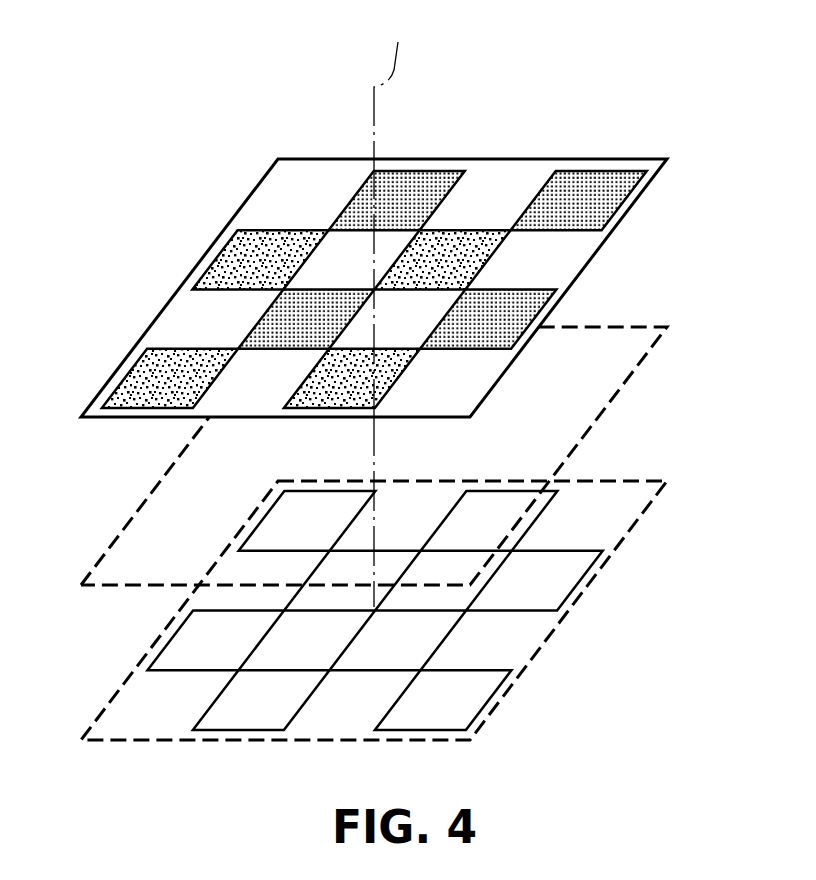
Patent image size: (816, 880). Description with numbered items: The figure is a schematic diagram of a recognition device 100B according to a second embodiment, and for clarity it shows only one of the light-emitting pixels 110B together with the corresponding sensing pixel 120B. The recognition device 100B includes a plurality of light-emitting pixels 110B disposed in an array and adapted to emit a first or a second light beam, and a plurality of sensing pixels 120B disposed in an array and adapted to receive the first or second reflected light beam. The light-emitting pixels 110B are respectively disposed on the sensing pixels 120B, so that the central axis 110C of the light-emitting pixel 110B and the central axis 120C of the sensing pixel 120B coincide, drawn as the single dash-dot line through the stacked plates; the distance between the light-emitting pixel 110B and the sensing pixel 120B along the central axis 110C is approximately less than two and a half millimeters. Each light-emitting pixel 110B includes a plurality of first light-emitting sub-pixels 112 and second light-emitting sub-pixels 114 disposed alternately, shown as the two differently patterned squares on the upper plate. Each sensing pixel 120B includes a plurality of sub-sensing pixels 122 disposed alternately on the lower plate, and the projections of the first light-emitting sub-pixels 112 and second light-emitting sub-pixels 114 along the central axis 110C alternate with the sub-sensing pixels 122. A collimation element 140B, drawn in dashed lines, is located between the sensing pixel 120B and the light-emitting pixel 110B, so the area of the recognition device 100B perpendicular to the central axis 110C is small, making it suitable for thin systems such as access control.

The recognition device 100B is at (404, 387).
The light-emitting pixel 110B is at (415, 250).
The first light-emitting sub-pixel 112 is at (463, 257).
The second light-emitting sub-pixel 114 is at (587, 199).
The central axis of the light-emitting pixel 110C is at (399, 303).
The central axis of the sensing pixel 120C is at (386, 324).
The sensing pixel 120B is at (429, 560).
The sub-sensing pixel 122 is at (545, 583).
The collimation element 140B is at (138, 510).